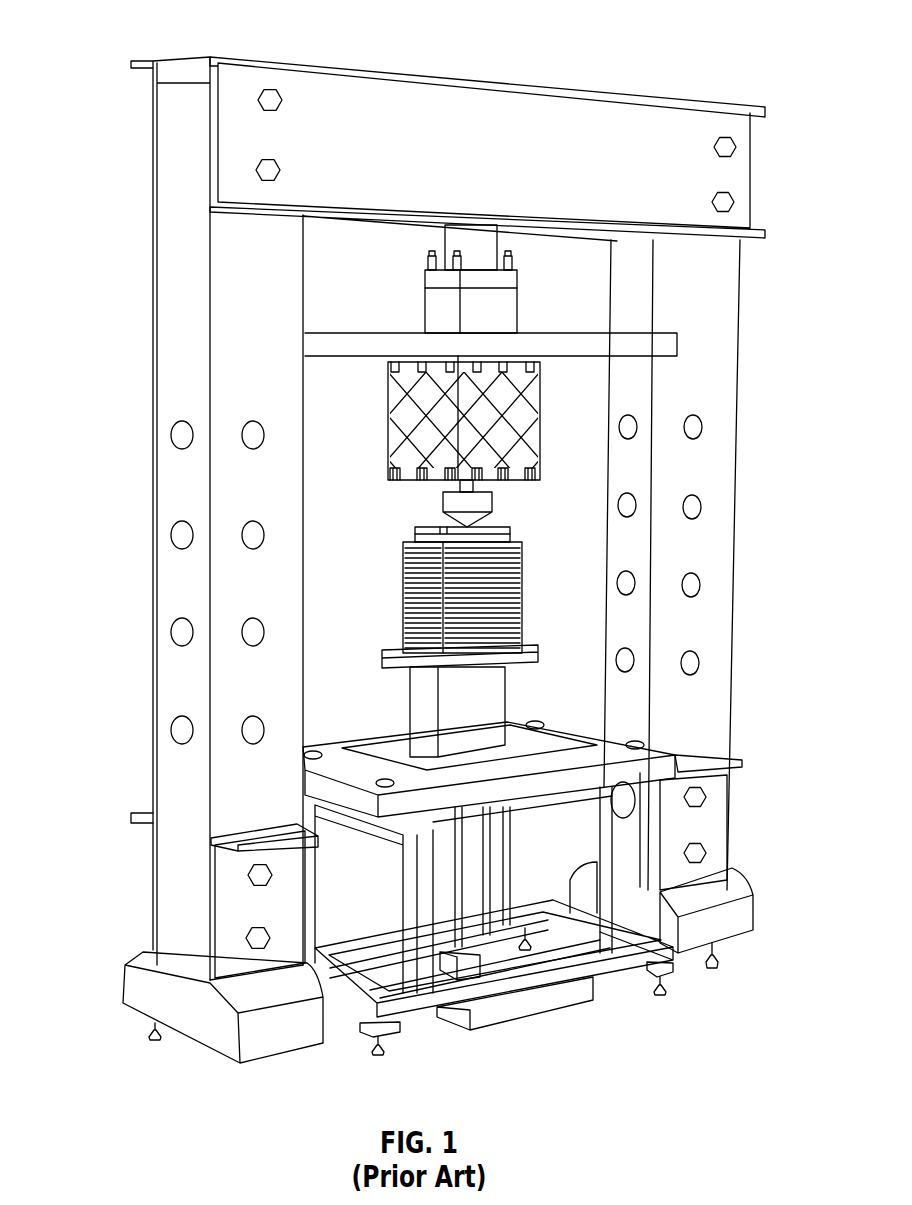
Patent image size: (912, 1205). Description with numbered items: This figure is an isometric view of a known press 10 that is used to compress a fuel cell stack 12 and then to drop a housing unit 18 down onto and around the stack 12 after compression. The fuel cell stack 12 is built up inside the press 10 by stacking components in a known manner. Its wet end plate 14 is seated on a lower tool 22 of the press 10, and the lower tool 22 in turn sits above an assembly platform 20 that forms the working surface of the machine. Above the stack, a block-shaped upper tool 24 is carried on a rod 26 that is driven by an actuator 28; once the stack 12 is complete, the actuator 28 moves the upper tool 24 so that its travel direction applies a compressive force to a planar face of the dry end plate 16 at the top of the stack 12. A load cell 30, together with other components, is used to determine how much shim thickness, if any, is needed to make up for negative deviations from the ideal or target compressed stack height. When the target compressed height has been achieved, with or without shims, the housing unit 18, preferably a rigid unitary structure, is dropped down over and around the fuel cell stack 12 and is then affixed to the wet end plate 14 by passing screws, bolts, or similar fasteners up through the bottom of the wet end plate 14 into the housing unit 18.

The press 10 is at (88, 38).
The fuel cell stack 12 is at (385, 615).
The wet end plate 14 is at (530, 653).
The dry end plate 16 is at (405, 545).
The housing unit 18 is at (388, 420).
The assembly platform 20 is at (687, 753).
The lower tool 22 is at (417, 717).
The upper tool 24 is at (510, 533).
The rod 26 is at (447, 490).
The actuator 28 is at (425, 313).
The load cell 30 is at (485, 505).